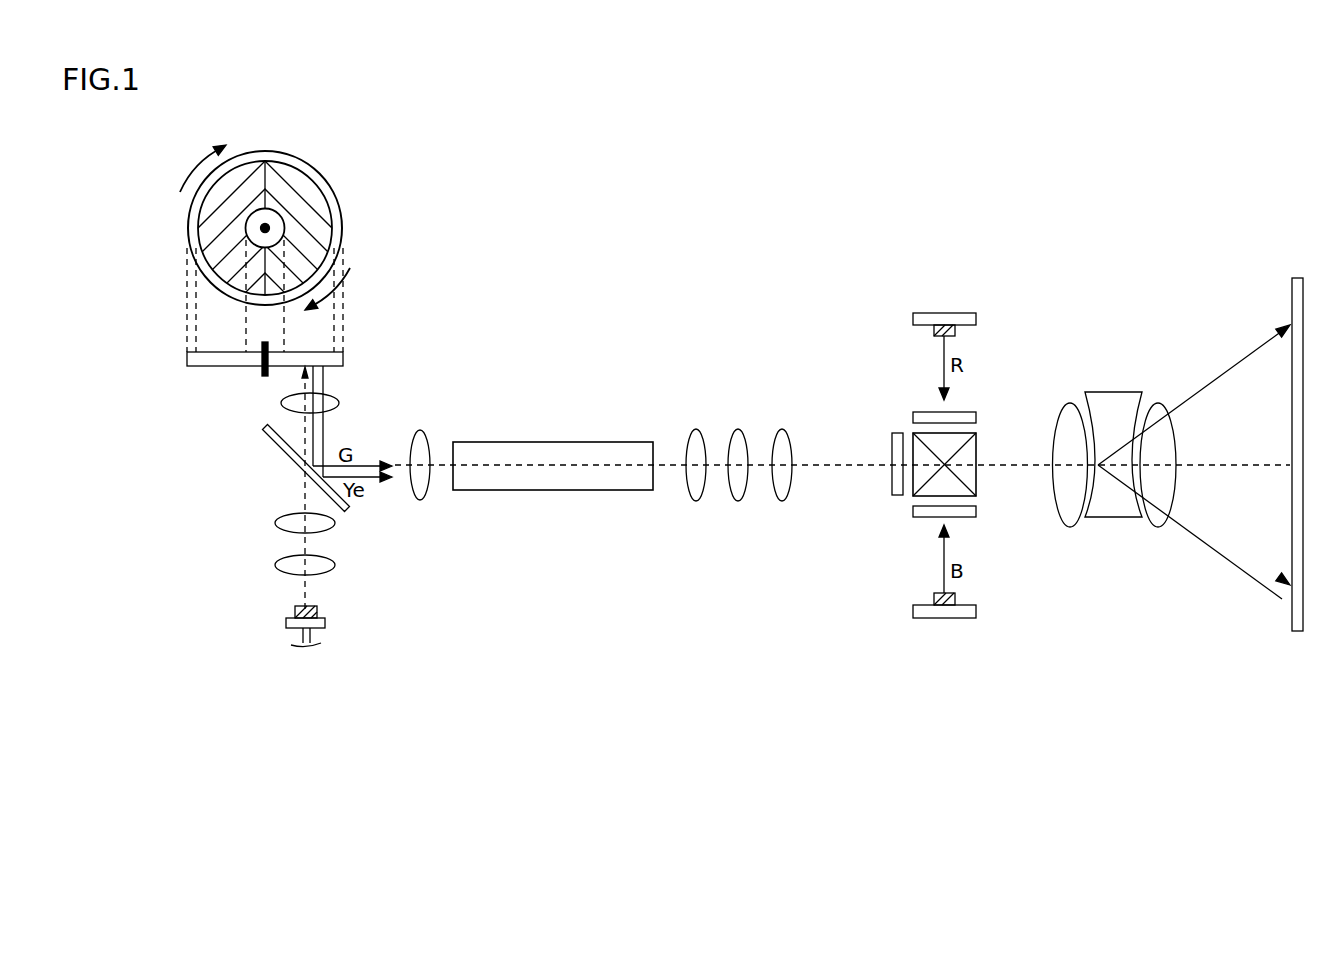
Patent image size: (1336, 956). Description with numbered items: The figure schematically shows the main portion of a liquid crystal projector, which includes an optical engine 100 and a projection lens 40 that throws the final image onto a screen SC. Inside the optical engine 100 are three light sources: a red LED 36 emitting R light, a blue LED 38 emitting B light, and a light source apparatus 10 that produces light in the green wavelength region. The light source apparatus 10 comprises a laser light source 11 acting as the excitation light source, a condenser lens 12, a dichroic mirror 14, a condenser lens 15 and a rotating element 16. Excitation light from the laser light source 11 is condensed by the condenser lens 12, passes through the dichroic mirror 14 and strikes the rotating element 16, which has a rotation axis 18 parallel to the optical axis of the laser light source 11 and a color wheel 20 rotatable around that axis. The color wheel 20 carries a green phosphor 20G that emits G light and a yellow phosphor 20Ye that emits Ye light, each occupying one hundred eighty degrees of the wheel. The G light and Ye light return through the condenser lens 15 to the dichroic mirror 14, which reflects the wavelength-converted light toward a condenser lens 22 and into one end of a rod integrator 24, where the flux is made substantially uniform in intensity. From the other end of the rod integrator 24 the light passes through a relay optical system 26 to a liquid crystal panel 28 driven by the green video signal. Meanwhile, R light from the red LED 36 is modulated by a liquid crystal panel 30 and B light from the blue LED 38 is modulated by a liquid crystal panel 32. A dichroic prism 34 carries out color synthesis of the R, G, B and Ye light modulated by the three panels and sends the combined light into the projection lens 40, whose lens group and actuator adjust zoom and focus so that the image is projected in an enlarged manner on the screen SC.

The optical engine 100 is at (757, 226).
The light source apparatus 10 is at (160, 348).
The laser light source 11 is at (295, 613).
The condenser lens 12 is at (272, 510).
The dichroic mirror 14 is at (287, 458).
The condenser lens 15 is at (281, 403).
The rotating element 16 is at (197, 367).
The rotation axis 18 is at (279, 214).
The color wheel 20 is at (320, 172).
The green phosphor 20G is at (208, 223).
The yellow phosphor 20Ye is at (322, 223).
The condenser lens 22 is at (421, 500).
The rod integrator 24 is at (553, 442).
The relay optical system 26 is at (795, 422).
The liquid crystal panel 28 is at (897, 496).
The liquid crystal panel 30 is at (963, 412).
The liquid crystal panel 32 is at (963, 518).
The dichroic prism 34 is at (977, 480).
The red LED 36 is at (957, 313).
The blue LED 38 is at (955, 619).
The projection lens 40 is at (1118, 389).
The screen SC is at (1296, 632).